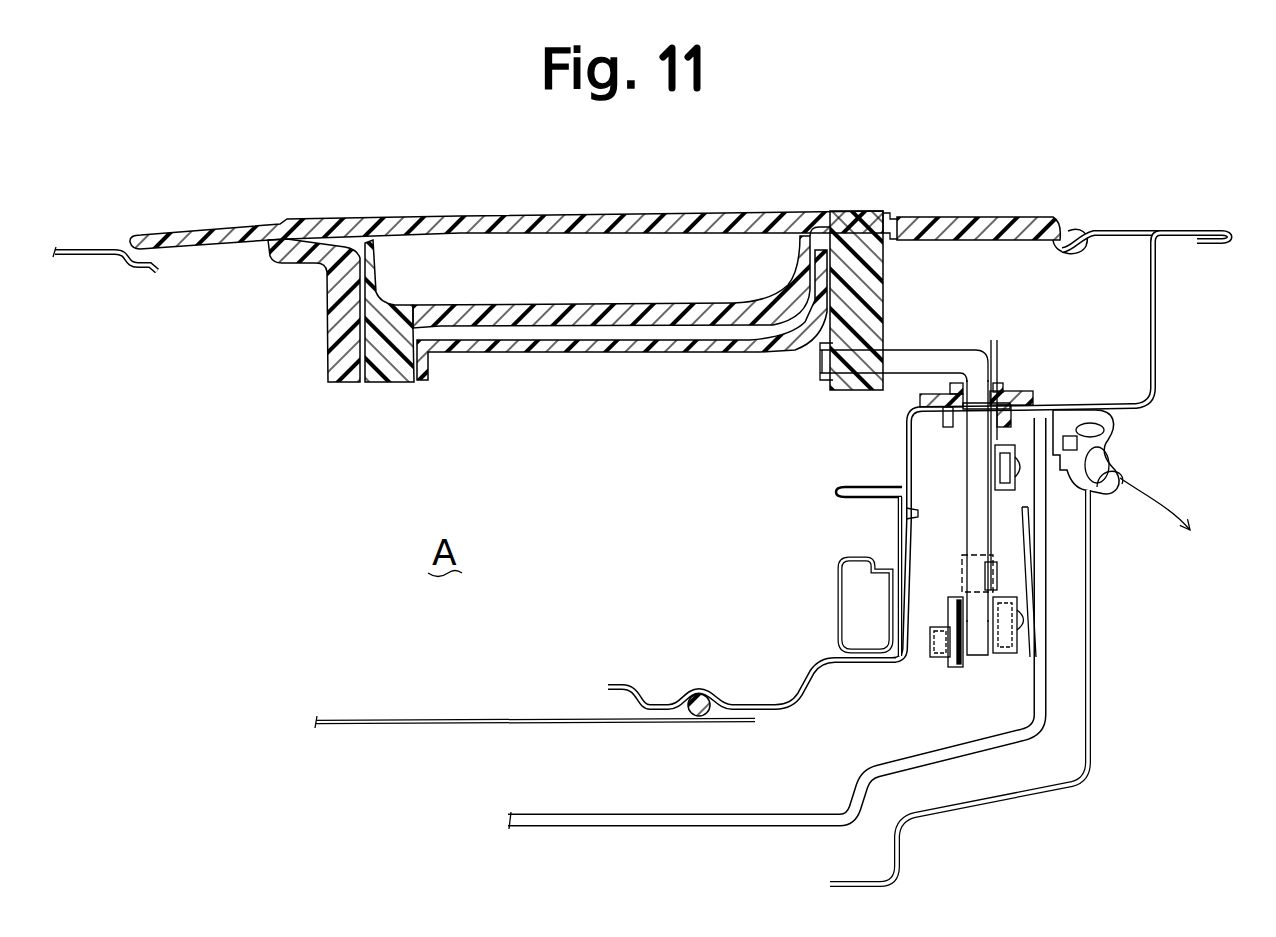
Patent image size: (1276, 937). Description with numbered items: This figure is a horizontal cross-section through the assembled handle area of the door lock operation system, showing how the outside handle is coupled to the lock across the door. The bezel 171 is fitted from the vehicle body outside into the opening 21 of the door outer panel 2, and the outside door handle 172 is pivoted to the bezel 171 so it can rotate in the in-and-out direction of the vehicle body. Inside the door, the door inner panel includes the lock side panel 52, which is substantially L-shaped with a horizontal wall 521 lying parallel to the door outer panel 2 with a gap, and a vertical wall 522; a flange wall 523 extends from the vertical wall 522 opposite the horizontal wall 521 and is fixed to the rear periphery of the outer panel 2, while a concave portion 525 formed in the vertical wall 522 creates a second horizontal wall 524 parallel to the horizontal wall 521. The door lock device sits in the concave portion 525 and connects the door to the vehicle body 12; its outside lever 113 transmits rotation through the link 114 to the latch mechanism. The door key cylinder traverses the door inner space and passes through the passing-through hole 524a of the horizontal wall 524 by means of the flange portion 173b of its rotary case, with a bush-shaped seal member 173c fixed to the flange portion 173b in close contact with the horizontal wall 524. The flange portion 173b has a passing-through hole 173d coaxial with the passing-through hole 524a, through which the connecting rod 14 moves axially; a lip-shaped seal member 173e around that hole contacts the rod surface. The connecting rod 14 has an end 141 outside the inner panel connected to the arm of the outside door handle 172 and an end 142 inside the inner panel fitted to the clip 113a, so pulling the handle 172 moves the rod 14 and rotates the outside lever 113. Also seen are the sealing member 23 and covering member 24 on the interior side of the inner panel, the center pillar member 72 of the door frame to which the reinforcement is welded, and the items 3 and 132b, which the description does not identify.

The door outer panel 2 is at (90, 244).
The body panel 3 is at (740, 830).
The vehicle body 12 is at (1093, 650).
The connecting rod 14 is at (850, 541).
The opening 21 is at (1062, 243).
The sealing member 23 is at (698, 718).
The covering member 24 is at (436, 725).
The lock side panel 52 is at (932, 477).
The center pillar member 72 is at (840, 594).
The outside lever 113 is at (957, 603).
The clip 113a is at (963, 557).
The link 114 is at (1017, 450).
The molding leg 132b is at (870, 305).
The end 141 is at (822, 362).
The end 142 is at (983, 657).
The bezel 171 is at (1045, 210).
The outside door handle 172 is at (500, 218).
The flange portion 173b is at (927, 390).
The seal member 173c is at (1033, 383).
The passing-through hole 173d is at (983, 350).
The seal member 173e is at (1000, 390).
The horizontal wall 521 is at (780, 711).
The vertical wall 522 is at (1158, 300).
The flange wall 523 is at (1192, 229).
The horizontal wall 524 is at (1087, 406).
The passing-through hole 524a is at (913, 452).
The concave portion 525 is at (910, 513).